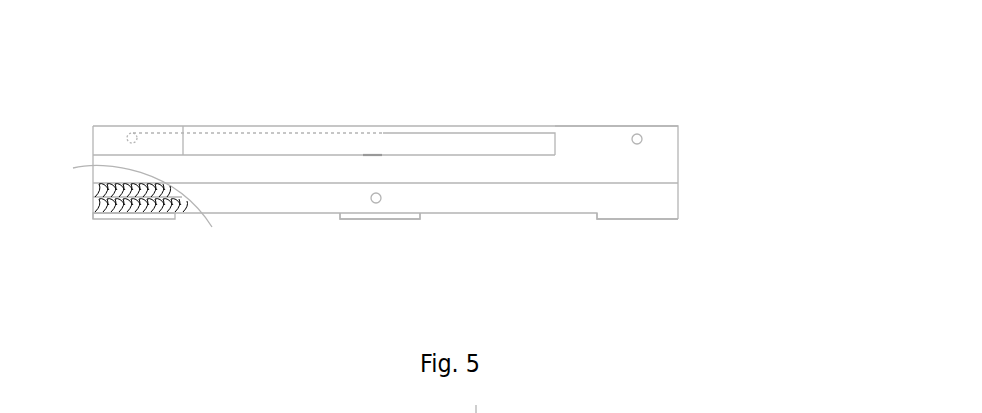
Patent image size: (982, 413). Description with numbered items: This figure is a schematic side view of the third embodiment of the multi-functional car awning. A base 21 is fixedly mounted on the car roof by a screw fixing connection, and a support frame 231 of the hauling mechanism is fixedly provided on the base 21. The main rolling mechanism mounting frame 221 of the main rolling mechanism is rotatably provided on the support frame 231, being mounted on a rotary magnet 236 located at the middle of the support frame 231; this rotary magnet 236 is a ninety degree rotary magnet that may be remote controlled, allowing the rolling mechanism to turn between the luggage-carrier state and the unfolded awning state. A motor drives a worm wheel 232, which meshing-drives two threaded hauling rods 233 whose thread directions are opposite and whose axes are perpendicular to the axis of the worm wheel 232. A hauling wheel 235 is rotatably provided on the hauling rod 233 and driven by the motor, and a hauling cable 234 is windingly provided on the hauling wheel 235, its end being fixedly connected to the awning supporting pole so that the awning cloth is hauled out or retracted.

The base 21 is at (668, 216).
The main rolling mechanism mounting frame 221 is at (183, 145).
The support frame 231 is at (422, 213).
The worm wheel 232 is at (378, 203).
The hauling rod 233 is at (103, 160).
The hauling cable 234 is at (614, 133).
The hauling wheel 235 is at (642, 137).
The rotary magnet 236 is at (375, 155).